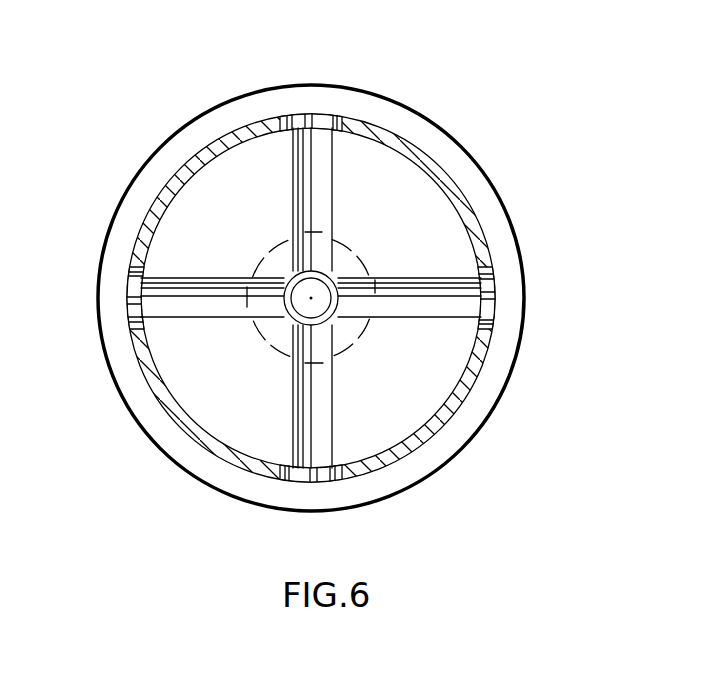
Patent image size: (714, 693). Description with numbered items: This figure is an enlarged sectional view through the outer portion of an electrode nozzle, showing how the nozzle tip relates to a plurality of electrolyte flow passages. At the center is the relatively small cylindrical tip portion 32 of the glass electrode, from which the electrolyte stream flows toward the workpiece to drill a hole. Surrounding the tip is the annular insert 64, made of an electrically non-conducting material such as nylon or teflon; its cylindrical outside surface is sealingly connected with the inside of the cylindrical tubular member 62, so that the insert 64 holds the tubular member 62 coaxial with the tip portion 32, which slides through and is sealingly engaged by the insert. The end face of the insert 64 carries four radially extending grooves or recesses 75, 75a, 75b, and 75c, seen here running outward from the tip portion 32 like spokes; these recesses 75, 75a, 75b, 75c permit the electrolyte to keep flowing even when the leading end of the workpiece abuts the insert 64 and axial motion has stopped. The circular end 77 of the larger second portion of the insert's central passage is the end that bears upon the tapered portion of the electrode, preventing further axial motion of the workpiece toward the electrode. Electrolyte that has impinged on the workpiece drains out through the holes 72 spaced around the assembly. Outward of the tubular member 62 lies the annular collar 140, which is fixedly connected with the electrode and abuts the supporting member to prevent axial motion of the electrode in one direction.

The annular collar 140 is at (497, 225).
The cylindrical tubular member 62 is at (513, 355).
The annular insert 64 is at (410, 408).
The holes 72 is at (318, 117).
The radially extending groove 75 is at (182, 277).
The radially extending groove 75a is at (333, 195).
The radially extending groove 75b is at (398, 278).
The radially extending groove 75c is at (293, 408).
The circular end 77 is at (292, 362).
The cylindrical tip portion 32 is at (335, 305).